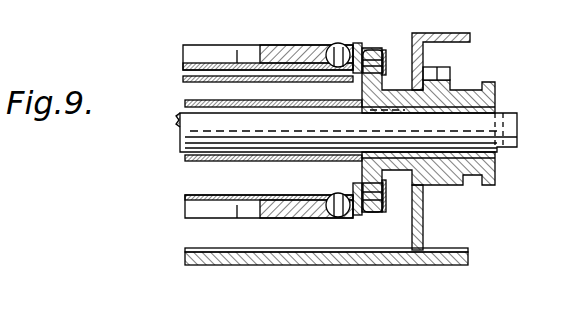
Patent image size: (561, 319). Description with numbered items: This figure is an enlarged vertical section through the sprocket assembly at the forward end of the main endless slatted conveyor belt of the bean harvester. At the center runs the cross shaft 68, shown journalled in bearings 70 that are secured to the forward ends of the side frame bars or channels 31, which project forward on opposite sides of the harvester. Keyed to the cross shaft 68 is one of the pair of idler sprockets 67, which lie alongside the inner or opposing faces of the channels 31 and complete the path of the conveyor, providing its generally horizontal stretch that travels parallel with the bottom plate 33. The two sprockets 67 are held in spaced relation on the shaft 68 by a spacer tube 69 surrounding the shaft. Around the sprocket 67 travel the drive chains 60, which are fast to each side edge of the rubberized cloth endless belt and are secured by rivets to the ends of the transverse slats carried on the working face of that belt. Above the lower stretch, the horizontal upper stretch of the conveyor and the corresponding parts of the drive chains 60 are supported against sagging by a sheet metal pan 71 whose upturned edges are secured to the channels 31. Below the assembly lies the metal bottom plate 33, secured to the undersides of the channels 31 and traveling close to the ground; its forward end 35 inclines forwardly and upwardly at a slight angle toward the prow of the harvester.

The channels 31 is at (452, 33).
The bottom plate 33 is at (185, 250).
The forward end 35 is at (185, 260).
The drive chains 60 is at (386, 80).
The idler sprockets 67 is at (360, 170).
The cross shaft 68 is at (180, 137).
The spacer tube 69 is at (185, 158).
The bearings 70 is at (462, 90).
The sheet metal pan 71 is at (183, 79).